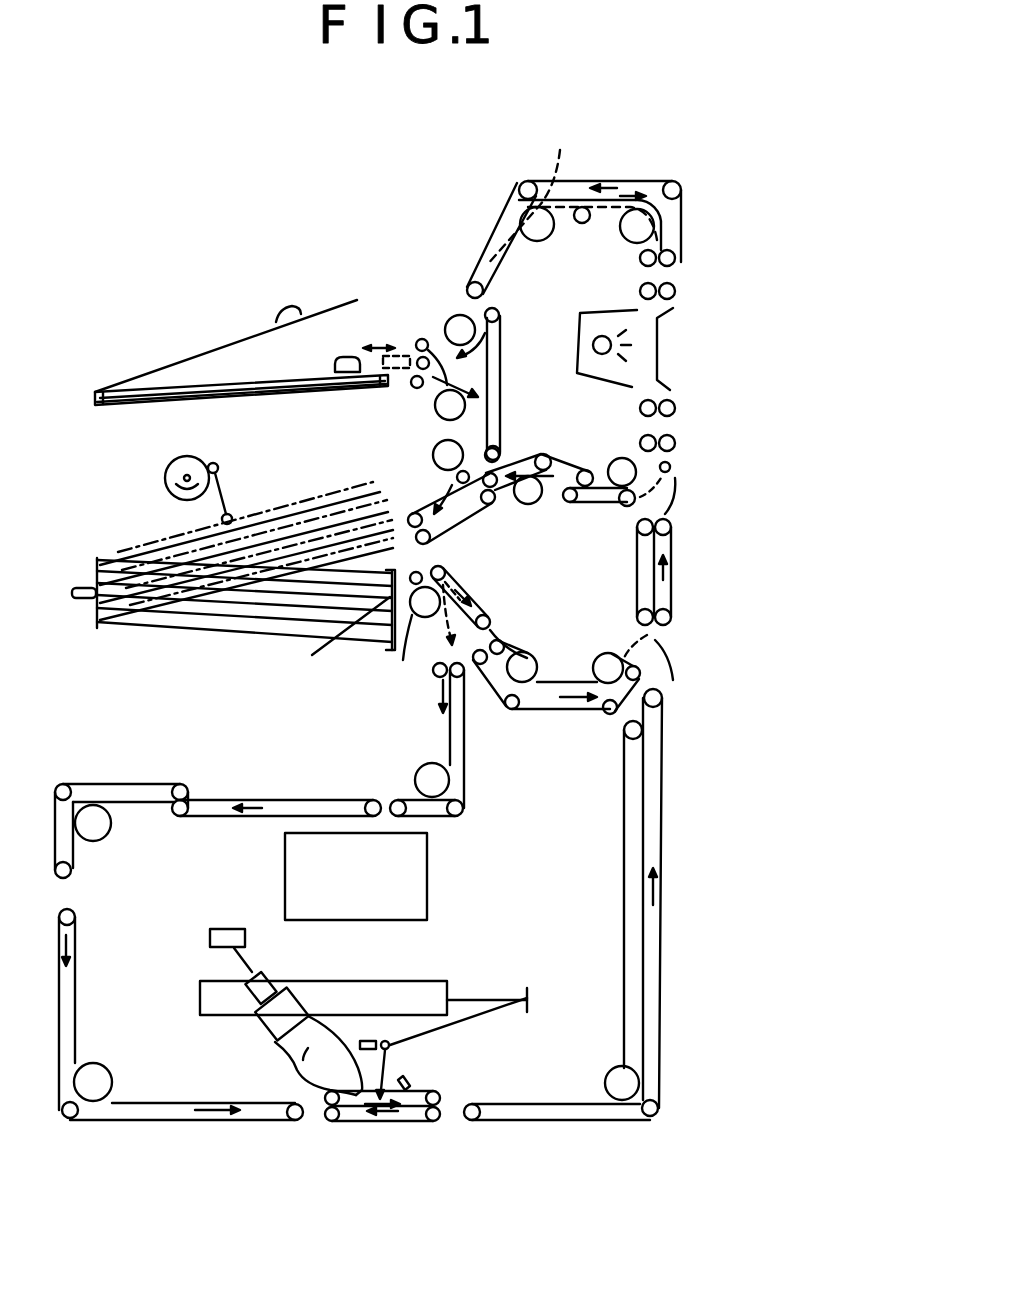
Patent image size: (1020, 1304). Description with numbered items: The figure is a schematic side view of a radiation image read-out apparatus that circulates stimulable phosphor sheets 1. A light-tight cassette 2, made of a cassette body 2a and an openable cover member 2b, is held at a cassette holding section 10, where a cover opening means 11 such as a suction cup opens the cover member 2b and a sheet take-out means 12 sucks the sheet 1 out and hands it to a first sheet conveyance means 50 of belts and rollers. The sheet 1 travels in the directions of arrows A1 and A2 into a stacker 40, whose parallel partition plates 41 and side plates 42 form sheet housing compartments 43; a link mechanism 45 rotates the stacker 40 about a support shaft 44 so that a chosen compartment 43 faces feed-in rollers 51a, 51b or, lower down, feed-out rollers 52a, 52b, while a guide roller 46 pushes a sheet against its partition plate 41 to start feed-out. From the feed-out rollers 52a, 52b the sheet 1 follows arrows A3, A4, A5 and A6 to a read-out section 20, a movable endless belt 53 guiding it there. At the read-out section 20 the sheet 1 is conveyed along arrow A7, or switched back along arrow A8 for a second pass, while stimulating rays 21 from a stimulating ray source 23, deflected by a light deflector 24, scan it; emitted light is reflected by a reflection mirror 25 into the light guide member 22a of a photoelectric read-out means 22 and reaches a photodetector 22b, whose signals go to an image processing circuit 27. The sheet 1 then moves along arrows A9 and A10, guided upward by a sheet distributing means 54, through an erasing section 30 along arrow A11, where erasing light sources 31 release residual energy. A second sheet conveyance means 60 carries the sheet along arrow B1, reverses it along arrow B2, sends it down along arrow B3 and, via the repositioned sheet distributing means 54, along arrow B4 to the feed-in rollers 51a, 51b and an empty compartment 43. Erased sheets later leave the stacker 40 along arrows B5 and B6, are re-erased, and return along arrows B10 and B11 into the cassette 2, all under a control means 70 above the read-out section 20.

The stimulable phosphor sheet 1 is at (240, 387).
The cassette 2 is at (150, 410).
The cassette body 2a is at (287, 400).
The cover member 2b is at (323, 317).
The cassette holding section 10 is at (252, 348).
The cover opening means 11 is at (290, 310).
The stimulable phosphor sheet take-out means 12 is at (343, 352).
The read-out section 20 is at (340, 989).
The stimulating rays 21 is at (483, 998).
The photoelectric read-out means 22 is at (260, 1037).
The light guide member 22a is at (310, 1055).
The photodetector 22b is at (250, 1032).
The stimulating ray source 23 is at (422, 977).
The light deflector 24 is at (400, 1048).
The reflection mirror 25 is at (410, 1085).
The image processing circuit 27 is at (212, 932).
The erasing section 30 is at (524, 363).
The erasing light source 31 is at (603, 336).
The stacker 40 is at (214, 583).
The partition plate 41 is at (265, 630).
The side plate 42 is at (393, 647).
The sheet housing compartment 43 is at (200, 628).
The support shaft 44 is at (73, 587).
The link mechanism 45 is at (235, 494).
The guide roller 46 is at (341, 648).
The first sheet conveyance means 50 is at (498, 360).
The feed-in roller 51a is at (412, 508).
The feed-in roller 51b is at (432, 545).
The feed-out roller 52a is at (445, 570).
The feed-out roller 52b is at (450, 695).
The endless belt 53 is at (498, 622).
The sheet distributing means 54 is at (682, 483).
The second sheet conveyance means 60 is at (598, 182).
The control means 70 is at (428, 875).
The arrow A1 is at (428, 338).
The arrow A2 is at (420, 480).
The arrow A3 is at (465, 693).
The arrow A4 is at (250, 816).
The arrow A5 is at (75, 952).
The arrow A6 is at (215, 1122).
The arrow A7 is at (382, 1122).
The arrow A8 is at (352, 1122).
The arrow A9 is at (657, 887).
The arrow A10 is at (670, 573).
The arrow A11 is at (670, 340).
The arrow B1 is at (630, 180).
The arrow B2 is at (610, 210).
The arrow B3 is at (662, 350).
The arrow B4 is at (562, 460).
The arrow B5 is at (556, 669).
The arrow B6 is at (578, 702).
The arrow B10 is at (495, 248).
The arrow B11 is at (498, 350).